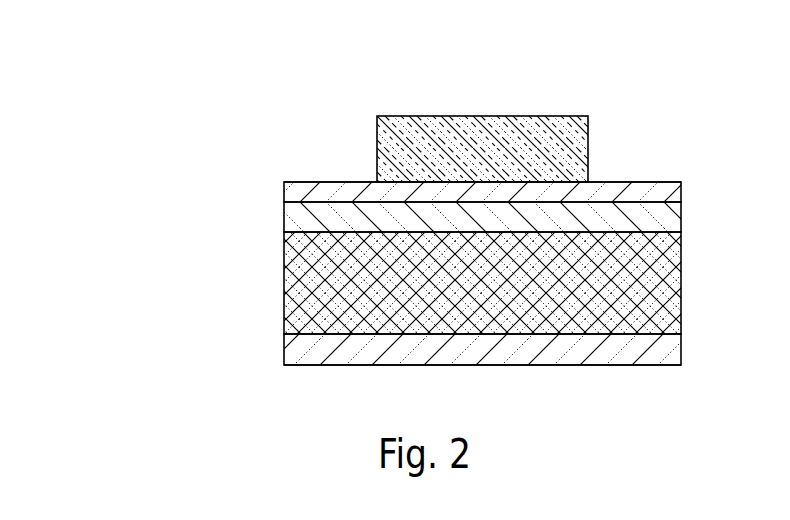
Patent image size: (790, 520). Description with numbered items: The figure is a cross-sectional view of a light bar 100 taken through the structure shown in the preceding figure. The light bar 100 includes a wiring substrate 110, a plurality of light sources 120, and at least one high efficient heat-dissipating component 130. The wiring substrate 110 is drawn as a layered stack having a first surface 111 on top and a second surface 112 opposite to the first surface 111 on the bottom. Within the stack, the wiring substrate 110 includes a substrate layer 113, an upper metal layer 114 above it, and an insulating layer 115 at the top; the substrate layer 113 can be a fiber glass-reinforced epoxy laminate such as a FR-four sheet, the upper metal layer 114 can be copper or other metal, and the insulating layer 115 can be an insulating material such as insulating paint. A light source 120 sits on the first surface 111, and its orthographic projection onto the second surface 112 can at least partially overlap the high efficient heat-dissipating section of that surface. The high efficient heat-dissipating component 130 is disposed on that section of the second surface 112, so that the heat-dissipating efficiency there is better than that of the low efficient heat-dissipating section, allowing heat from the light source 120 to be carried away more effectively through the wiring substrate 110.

The light bar 100 is at (165, 43).
The wiring substrate 110 is at (118, 137).
The first surface 111 is at (325, 182).
The second surface 112 is at (284, 355).
The substrate layer 113 is at (284, 284).
The upper metal layer 114 is at (284, 220).
The insulating layer 115 is at (284, 192).
The light source 120 is at (377, 136).
The high efficient heat-dissipating component 130 is at (320, 365).